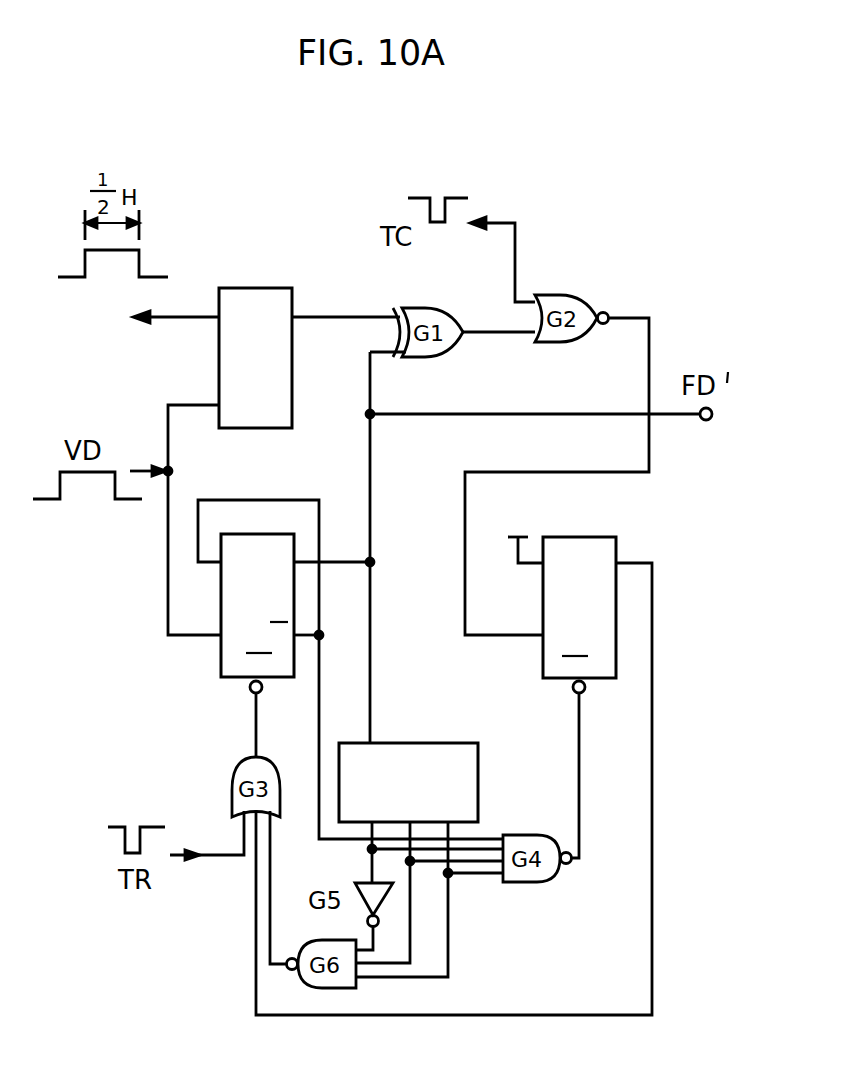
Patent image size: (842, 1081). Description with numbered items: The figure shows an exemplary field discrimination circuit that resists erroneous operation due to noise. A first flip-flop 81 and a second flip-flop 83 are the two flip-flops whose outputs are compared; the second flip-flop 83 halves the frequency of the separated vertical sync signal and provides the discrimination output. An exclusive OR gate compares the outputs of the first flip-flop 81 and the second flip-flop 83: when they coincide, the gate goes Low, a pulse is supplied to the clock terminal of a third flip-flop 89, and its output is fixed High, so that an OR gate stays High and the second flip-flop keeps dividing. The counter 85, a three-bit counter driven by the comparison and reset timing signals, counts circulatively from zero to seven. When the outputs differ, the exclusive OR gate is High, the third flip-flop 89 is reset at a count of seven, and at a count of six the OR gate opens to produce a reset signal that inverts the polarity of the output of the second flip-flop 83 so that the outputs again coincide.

The flip-flop 81 is at (279, 288).
The flip-flop 83 is at (232, 680).
The counter 85 is at (478, 772).
The flip-flop 89 is at (616, 545).